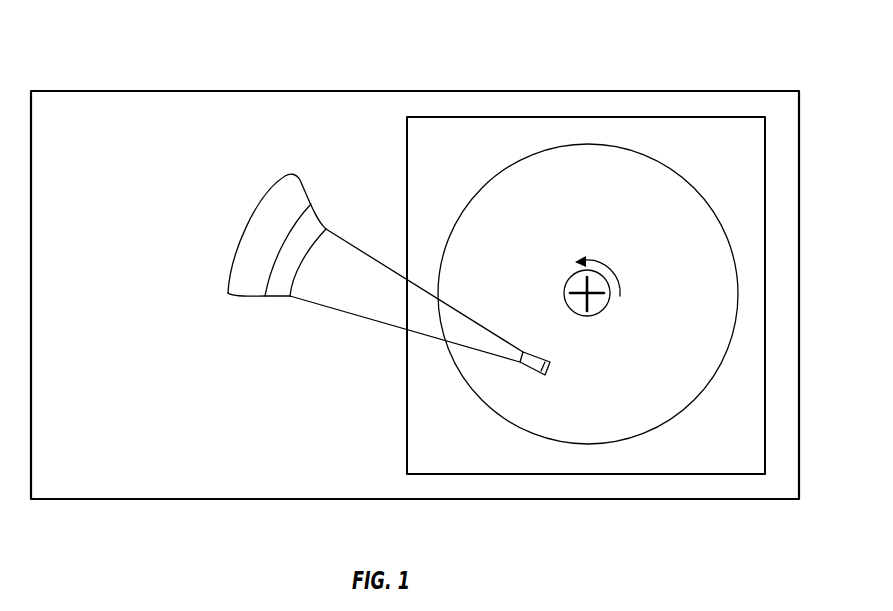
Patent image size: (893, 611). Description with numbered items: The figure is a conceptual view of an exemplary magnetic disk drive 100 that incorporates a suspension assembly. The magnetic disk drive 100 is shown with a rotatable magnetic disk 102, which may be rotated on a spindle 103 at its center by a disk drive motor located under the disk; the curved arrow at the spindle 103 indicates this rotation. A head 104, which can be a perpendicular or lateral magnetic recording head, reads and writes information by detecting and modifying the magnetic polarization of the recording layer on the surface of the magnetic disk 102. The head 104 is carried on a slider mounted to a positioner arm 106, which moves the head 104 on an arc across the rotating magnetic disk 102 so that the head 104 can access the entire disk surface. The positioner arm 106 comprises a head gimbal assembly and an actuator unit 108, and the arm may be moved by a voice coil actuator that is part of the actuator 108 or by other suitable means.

The magnetic disk drive 100 is at (762, 78).
The rotatable magnetic disk 102 is at (671, 190).
The spindle 103 is at (601, 304).
The head 104 is at (546, 371).
The positioner arm 106 is at (343, 298).
The actuator unit 108 is at (238, 252).